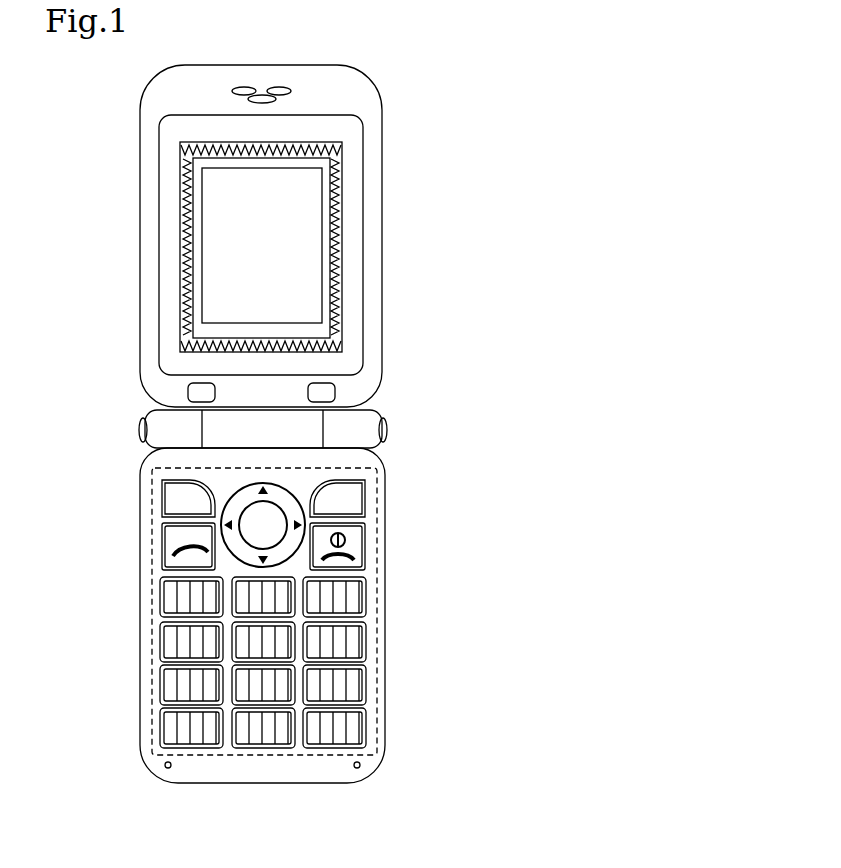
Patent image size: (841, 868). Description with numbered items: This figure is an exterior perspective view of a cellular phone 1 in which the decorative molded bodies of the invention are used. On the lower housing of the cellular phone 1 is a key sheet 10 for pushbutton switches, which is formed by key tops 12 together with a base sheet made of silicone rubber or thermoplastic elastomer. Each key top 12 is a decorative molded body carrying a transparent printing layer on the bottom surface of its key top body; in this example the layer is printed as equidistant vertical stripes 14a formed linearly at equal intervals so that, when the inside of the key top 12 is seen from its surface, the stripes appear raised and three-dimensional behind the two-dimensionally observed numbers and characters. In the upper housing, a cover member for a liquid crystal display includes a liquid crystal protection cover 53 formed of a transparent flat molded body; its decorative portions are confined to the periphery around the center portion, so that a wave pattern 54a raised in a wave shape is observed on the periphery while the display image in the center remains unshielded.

The cellular phone 1 is at (338, 424).
The key sheet 10 is at (406, 609).
The key top 12 is at (368, 593).
The vertical stripes 14a is at (357, 675).
The liquid crystal protection cover 53 is at (179, 284).
The wave pattern 54a is at (182, 214).